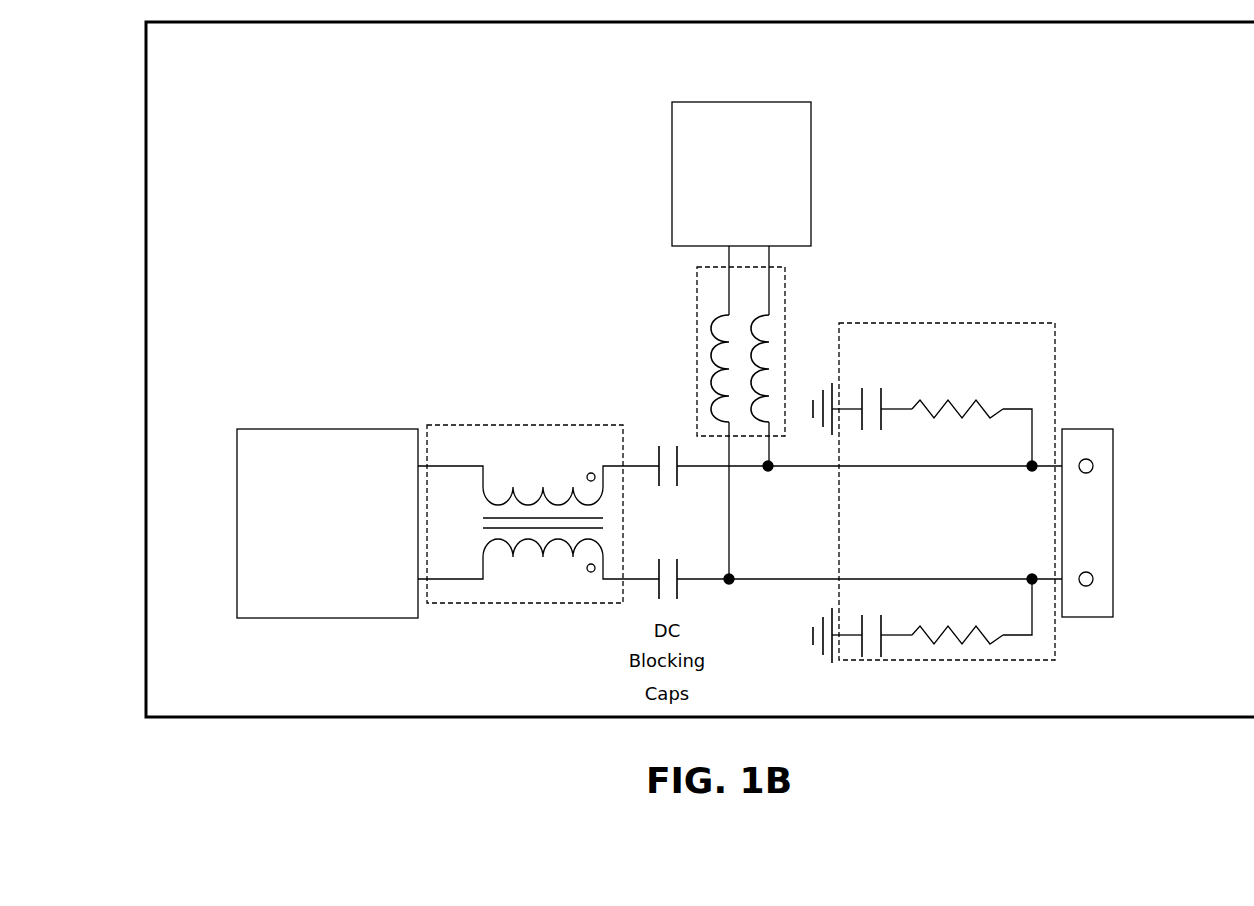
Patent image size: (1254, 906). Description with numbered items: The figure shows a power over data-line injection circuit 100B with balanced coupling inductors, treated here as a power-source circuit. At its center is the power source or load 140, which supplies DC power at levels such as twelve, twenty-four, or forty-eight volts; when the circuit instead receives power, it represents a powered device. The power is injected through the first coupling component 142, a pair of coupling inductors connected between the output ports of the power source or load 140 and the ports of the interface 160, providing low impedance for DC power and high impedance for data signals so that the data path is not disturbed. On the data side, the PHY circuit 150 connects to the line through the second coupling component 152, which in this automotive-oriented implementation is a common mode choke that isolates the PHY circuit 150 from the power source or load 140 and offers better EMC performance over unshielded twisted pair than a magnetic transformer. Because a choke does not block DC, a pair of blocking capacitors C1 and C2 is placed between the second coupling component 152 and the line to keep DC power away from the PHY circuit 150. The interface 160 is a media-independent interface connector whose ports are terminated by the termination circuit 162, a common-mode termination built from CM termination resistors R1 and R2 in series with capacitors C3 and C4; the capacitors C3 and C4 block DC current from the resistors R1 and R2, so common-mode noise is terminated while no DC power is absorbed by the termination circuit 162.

The PoDL injection circuit 100B is at (257, 71).
The power source or load 140 is at (668, 148).
The first coupling component 142 is at (789, 314).
The PHY circuit 150 is at (292, 424).
The second coupling component 152 is at (500, 423).
The interface 160 is at (1125, 460).
The termination circuit 162 is at (934, 464).
The blocking capacitor C1 is at (664, 445).
The blocking capacitor C2 is at (664, 557).
The capacitor C3 is at (850, 419).
The capacitor C4 is at (850, 619).
The CM termination resistor R1 is at (956, 433).
The CM termination resistor R2 is at (956, 611).